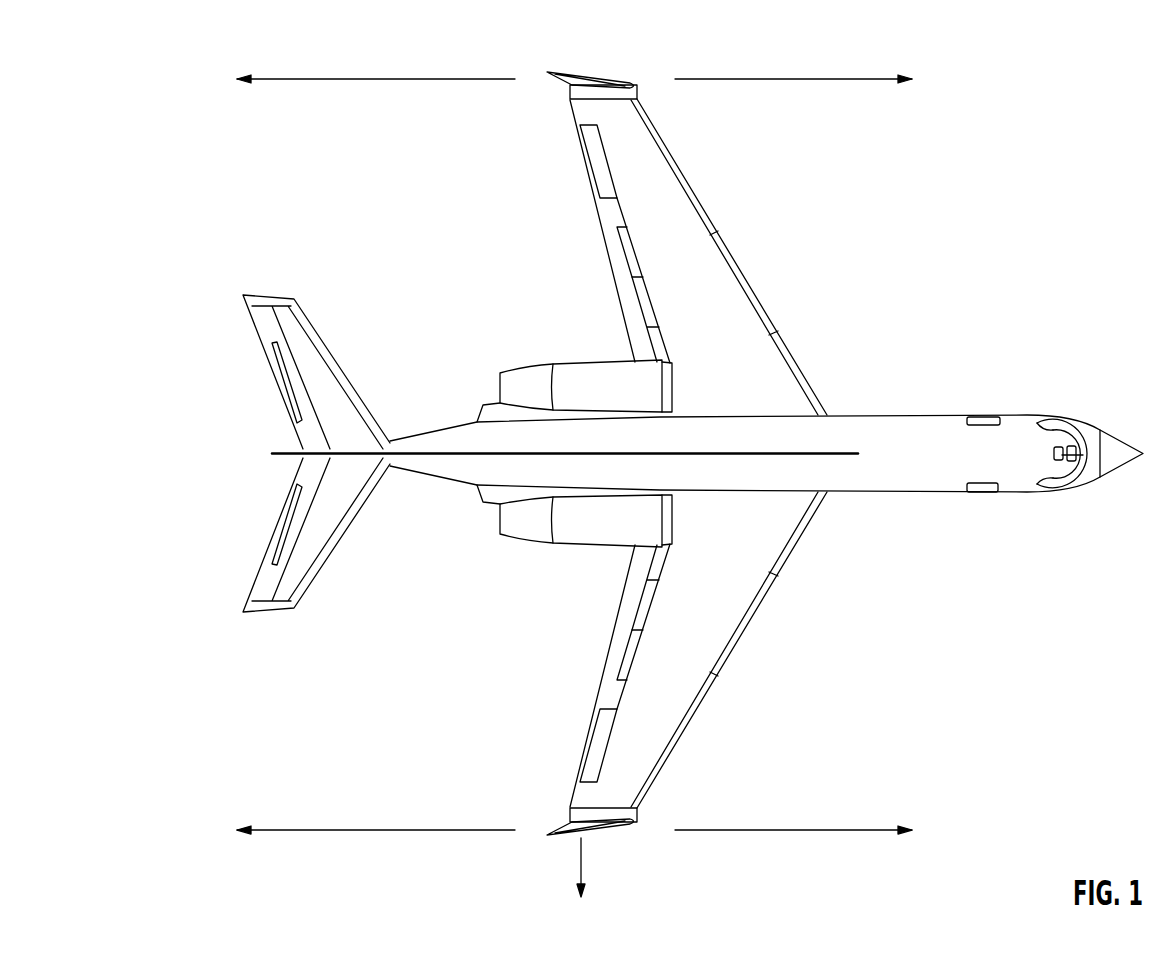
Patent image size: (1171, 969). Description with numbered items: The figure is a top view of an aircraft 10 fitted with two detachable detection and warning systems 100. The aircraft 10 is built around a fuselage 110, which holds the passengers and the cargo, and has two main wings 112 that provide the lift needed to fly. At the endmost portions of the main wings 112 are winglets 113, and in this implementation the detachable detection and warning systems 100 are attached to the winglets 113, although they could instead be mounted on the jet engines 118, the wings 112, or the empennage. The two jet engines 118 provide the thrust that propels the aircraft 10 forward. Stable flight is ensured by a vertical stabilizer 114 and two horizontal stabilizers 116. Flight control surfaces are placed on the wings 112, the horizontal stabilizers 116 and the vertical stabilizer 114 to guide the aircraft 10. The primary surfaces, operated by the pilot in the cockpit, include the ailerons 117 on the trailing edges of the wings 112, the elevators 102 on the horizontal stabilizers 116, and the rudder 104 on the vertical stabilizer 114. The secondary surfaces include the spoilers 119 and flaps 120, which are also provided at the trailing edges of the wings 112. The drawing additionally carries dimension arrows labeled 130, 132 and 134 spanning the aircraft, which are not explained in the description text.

The aircraft 10 is at (928, 178).
The detachable detection and warning system 100 is at (570, 88).
The elevator 102 is at (277, 368).
The rudder 104 is at (277, 448).
The fuselage 110 is at (910, 428).
The main wing 112 is at (735, 298).
The winglet 113 is at (562, 72).
The vertical stabilizer 114 is at (347, 445).
The horizontal stabilizer 116 is at (305, 338).
The aileron 117 is at (597, 163).
The jet engine 118 is at (583, 373).
The spoiler 119 is at (640, 295).
The flap 120 is at (613, 247).
The first span dimension 130 is at (375, 78).
The fuselage centerline direction 132 is at (577, 873).
The second span dimension 134 is at (795, 78).